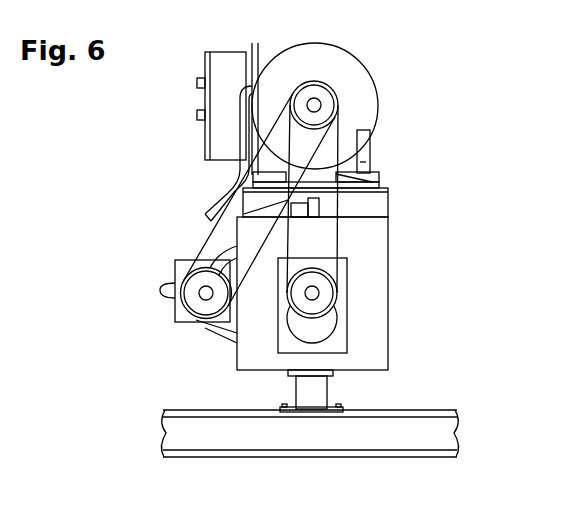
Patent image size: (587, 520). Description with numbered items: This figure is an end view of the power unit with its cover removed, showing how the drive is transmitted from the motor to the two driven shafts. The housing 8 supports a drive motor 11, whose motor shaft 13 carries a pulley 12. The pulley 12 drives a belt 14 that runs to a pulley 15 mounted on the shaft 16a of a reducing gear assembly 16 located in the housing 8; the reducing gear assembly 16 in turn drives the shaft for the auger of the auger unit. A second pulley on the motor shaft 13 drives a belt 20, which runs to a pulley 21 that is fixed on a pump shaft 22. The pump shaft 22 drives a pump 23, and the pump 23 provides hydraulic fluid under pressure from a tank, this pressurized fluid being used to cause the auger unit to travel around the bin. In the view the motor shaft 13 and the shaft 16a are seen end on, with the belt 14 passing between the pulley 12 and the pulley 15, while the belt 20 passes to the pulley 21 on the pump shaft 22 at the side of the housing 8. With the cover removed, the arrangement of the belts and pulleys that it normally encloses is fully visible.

The housing 8 is at (384, 352).
The drive motor 11 is at (352, 57).
The pulley 12 is at (329, 93).
The motor shaft 13 is at (321, 107).
The belt 14 is at (338, 150).
The pulley 15 is at (327, 289).
The reducing gear assembly 16 is at (344, 265).
The shaft 16a is at (319, 296).
The belt 20 is at (275, 119).
The pulley 21 is at (188, 300).
The pump shaft 22 is at (204, 300).
The pump 23 is at (177, 271).